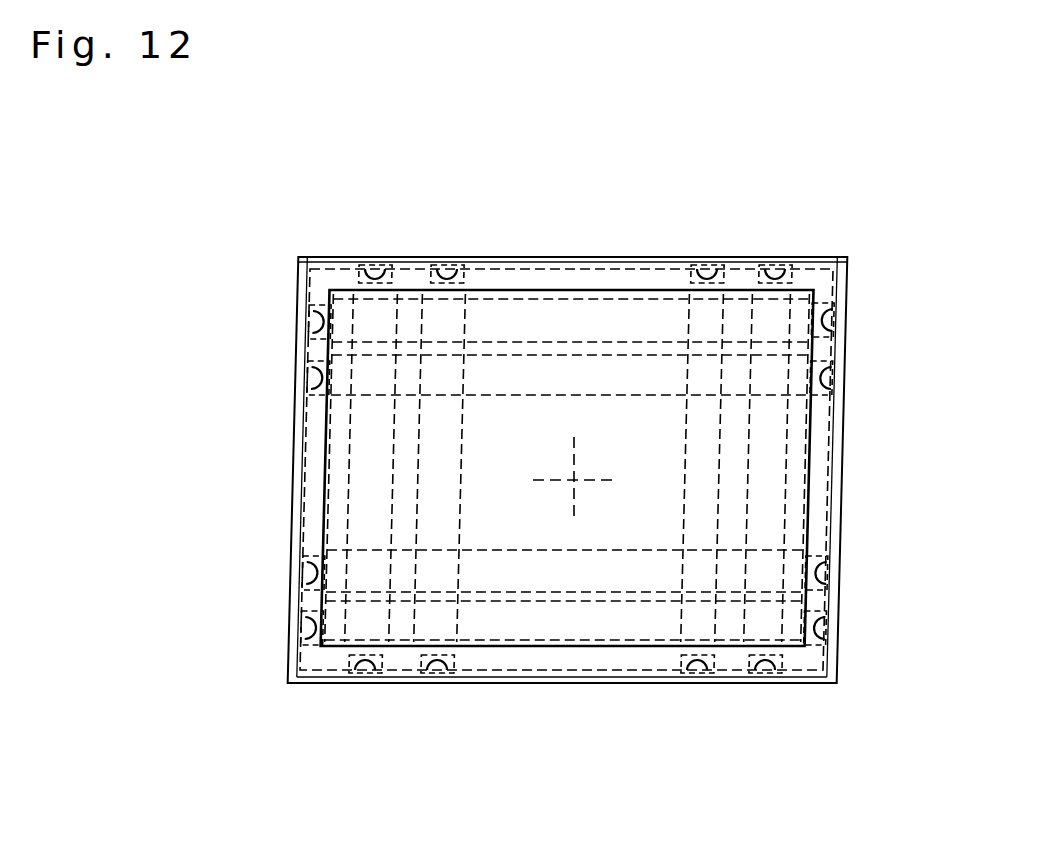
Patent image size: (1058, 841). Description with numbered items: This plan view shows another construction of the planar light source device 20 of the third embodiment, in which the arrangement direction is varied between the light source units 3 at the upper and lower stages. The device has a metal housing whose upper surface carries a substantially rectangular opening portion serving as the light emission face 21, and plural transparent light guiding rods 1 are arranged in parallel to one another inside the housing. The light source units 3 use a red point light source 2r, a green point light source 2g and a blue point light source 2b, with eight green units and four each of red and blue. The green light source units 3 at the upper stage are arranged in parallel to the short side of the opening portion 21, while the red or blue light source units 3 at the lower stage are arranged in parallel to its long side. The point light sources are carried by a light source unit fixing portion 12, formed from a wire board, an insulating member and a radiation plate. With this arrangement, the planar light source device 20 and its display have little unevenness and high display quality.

The light guiding rod 1 is at (341, 288).
The green point light source 2g is at (378, 271).
The red point light source 2r is at (313, 321).
The blue point light source 2b is at (313, 378).
The light source unit 3 is at (410, 186).
The light source unit fixing portion 12 is at (812, 255).
The planar light source device 20 is at (611, 245).
The light emission face 21 is at (602, 527).